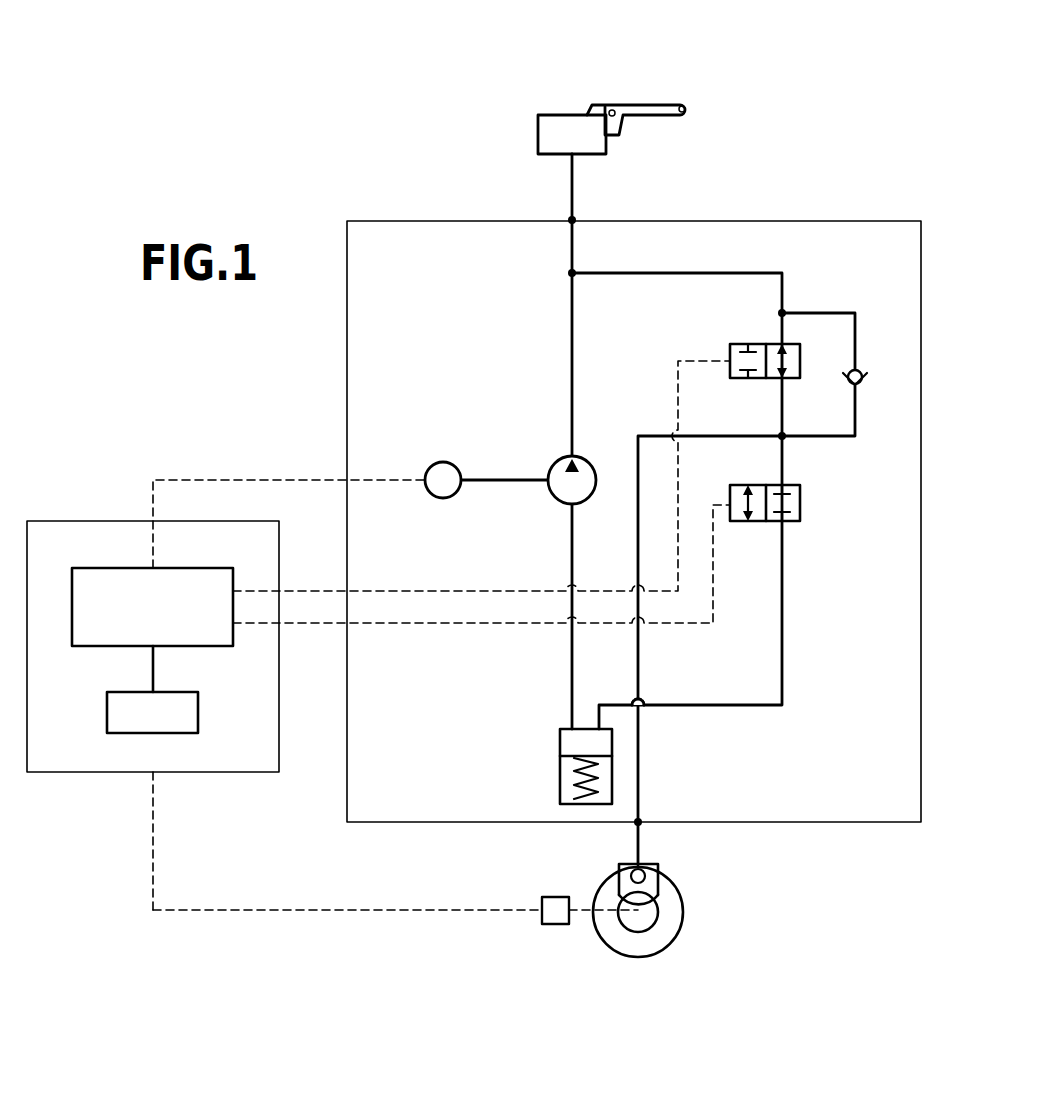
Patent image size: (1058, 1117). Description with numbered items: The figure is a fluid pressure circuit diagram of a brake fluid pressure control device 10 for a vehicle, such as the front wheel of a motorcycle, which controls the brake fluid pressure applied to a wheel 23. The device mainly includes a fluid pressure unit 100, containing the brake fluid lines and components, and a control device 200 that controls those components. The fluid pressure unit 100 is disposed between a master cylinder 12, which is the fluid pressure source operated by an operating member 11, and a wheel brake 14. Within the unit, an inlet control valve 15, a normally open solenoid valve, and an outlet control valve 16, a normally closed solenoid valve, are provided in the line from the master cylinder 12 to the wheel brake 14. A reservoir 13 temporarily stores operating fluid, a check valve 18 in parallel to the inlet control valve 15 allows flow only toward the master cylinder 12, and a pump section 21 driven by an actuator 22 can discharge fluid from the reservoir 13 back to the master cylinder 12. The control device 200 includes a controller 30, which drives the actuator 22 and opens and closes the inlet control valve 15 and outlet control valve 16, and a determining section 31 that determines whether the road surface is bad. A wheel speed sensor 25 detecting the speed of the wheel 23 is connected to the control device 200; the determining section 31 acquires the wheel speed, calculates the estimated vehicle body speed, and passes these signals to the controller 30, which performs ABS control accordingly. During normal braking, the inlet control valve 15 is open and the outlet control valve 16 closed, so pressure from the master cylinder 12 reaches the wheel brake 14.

The brake fluid pressure control device 10 is at (823, 80).
The fluid pressure unit 100 is at (820, 220).
The operating member 11 is at (688, 105).
The master cylinder 12 is at (571, 127).
The reservoir 13 is at (562, 742).
The wheel brake 14 is at (665, 888).
The inlet control valve 15 is at (742, 344).
The outlet control valve 16 is at (746, 485).
The check valve 18 is at (862, 385).
The pump section 21 is at (556, 462).
The actuator 22 is at (442, 462).
The wheel 23 is at (678, 945).
The wheel speed sensor 25 is at (551, 930).
The controller 30 is at (193, 568).
The determining section 31 is at (198, 710).
The control device 200 is at (225, 775).